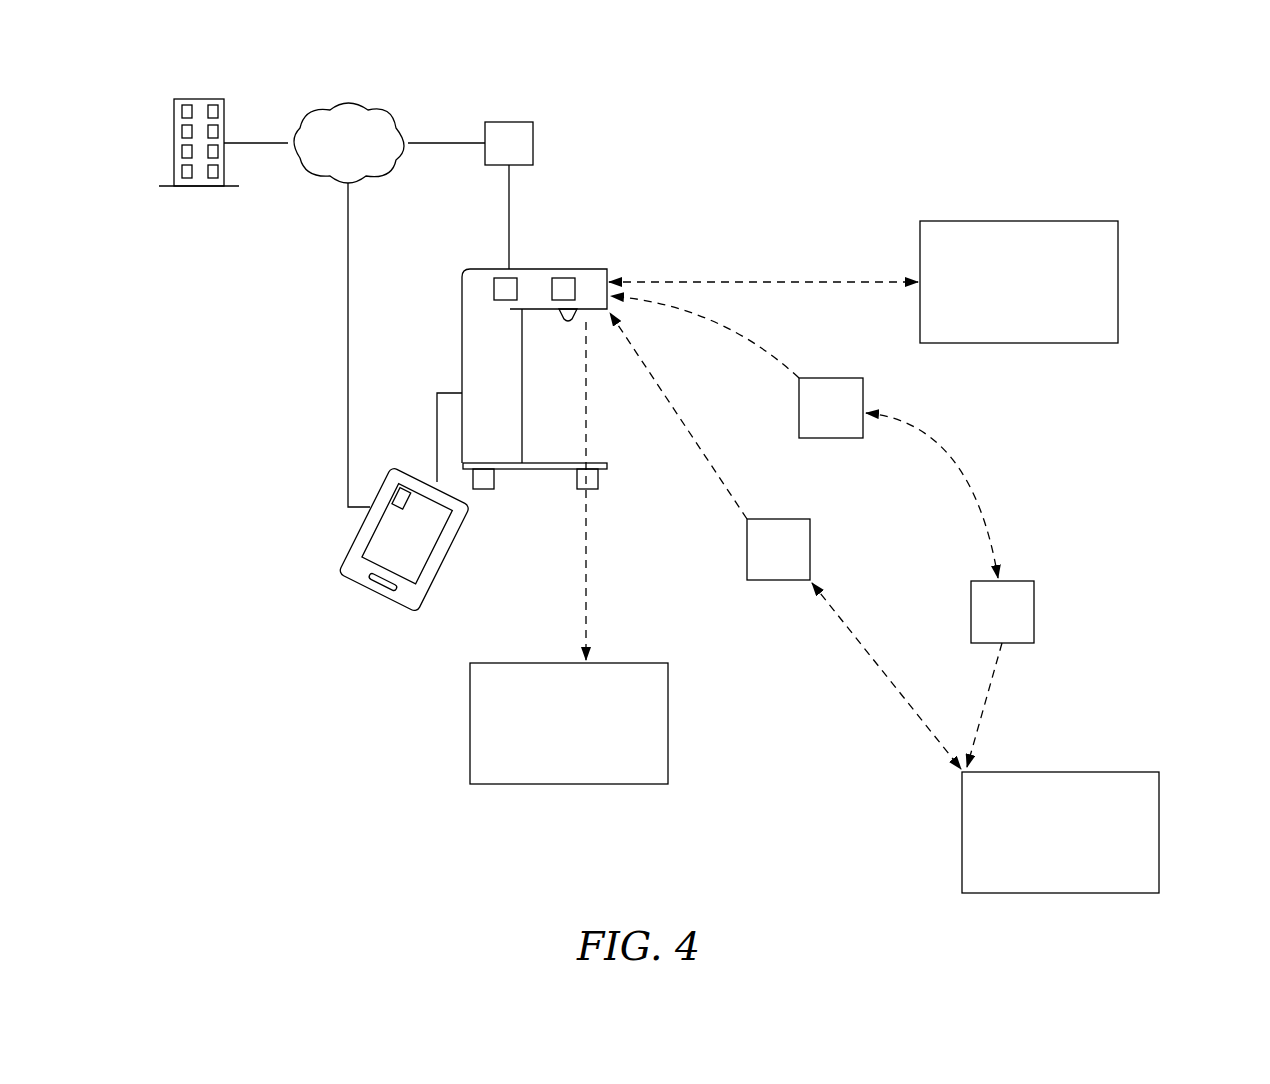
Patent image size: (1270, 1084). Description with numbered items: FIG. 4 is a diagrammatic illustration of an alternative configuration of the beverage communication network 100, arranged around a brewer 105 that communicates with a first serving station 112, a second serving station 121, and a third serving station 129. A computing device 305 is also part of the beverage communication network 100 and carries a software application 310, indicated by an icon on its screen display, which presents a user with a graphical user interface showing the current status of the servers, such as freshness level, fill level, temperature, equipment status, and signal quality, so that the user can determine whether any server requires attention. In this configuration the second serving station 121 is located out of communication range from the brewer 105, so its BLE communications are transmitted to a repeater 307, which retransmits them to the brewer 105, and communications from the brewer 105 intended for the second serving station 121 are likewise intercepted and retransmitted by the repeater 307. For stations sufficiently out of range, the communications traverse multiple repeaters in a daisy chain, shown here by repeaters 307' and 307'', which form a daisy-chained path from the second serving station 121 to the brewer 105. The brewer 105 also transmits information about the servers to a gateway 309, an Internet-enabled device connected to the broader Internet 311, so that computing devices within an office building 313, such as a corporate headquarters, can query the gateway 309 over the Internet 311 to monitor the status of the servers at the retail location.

The beverage communication network 100 is at (828, 194).
The brewer 105 is at (462, 353).
The first serving station 112 is at (1118, 278).
The second serving station 121 is at (1159, 812).
The third serving station 129 is at (470, 737).
The computing device 305 is at (364, 537).
The repeater 307 is at (751, 448).
The repeater 307' is at (995, 535).
The repeater 307'' is at (787, 367).
The gateway 309 is at (533, 140).
The software application 310 is at (403, 493).
The Internet 311 is at (349, 143).
The office building 313 is at (232, 104).